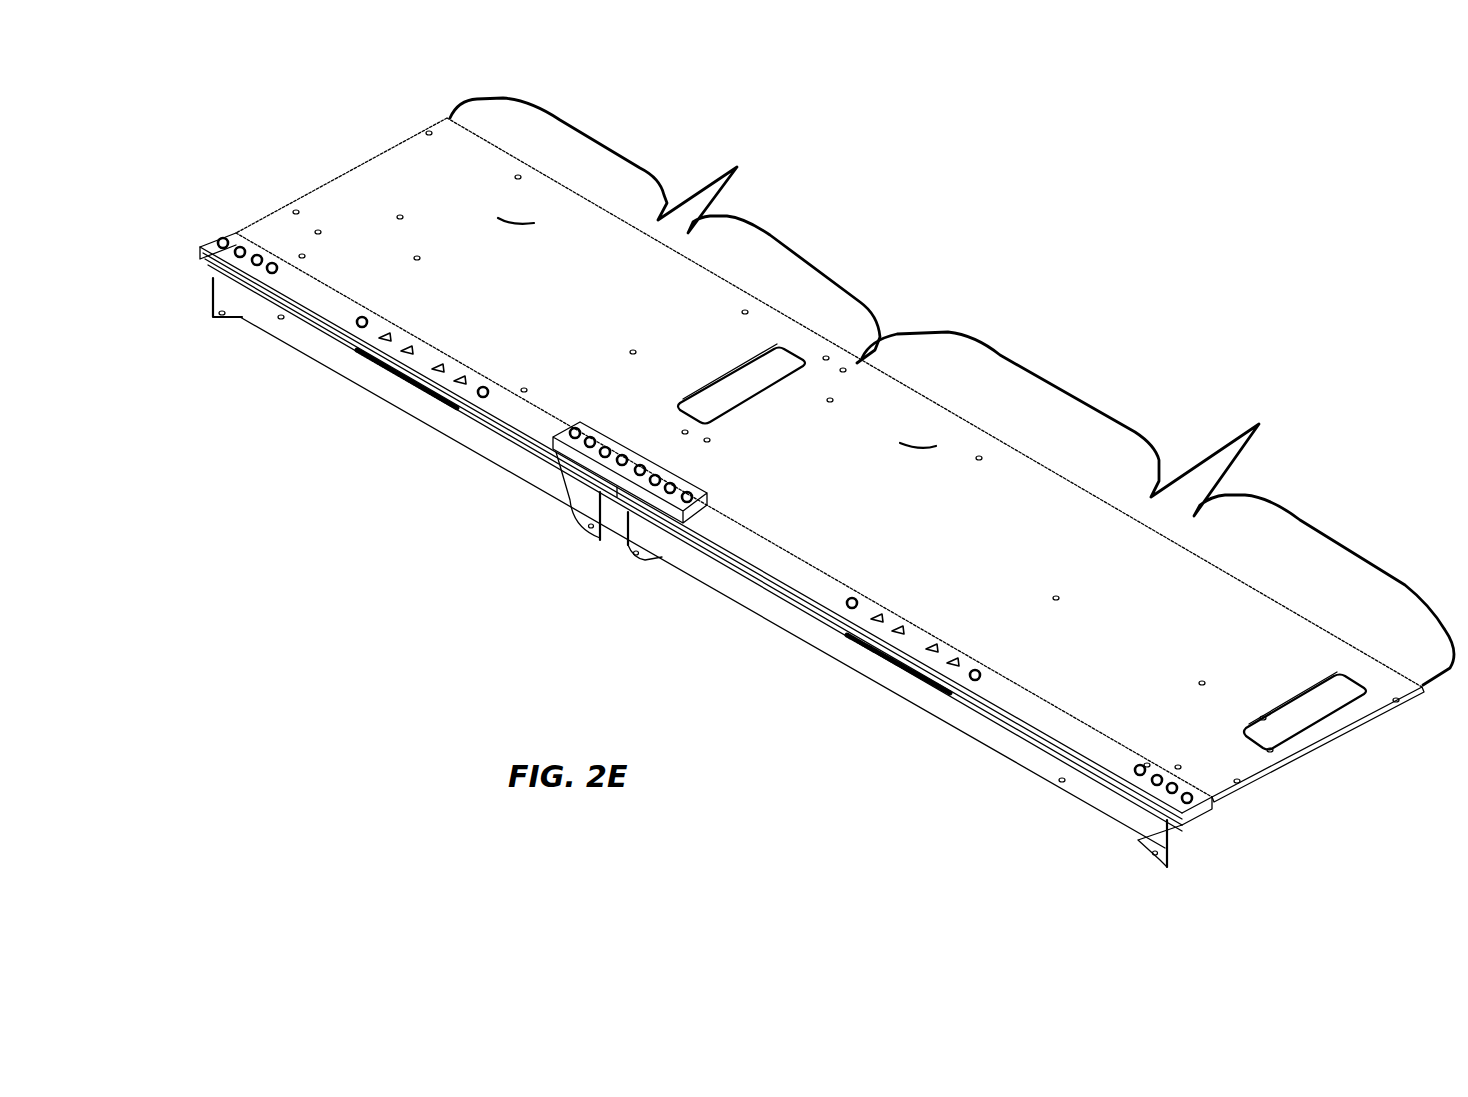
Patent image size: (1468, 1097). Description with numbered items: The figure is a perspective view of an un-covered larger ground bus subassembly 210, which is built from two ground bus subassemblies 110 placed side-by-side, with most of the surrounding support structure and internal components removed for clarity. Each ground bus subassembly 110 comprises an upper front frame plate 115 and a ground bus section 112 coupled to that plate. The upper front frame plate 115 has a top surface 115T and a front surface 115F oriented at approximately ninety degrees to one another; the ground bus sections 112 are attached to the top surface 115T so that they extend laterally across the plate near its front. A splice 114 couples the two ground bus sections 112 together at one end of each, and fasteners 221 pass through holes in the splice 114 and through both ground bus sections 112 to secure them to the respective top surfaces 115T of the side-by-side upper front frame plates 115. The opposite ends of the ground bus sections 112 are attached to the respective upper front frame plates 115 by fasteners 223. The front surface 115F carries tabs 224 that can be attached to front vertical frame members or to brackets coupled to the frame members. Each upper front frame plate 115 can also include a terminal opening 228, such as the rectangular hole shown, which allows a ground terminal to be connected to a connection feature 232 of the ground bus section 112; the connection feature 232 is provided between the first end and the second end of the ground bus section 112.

The ground bus subassembly 110 is at (383, 181).
The ground bus section 112 is at (355, 292).
The splice 114 is at (623, 443).
The upper front frame plate 115 is at (304, 362).
The top surface 115T is at (513, 212).
The front surface 115F is at (497, 445).
The larger ground bus subassembly 210 is at (938, 250).
The fasteners 221 is at (622, 465).
The fasteners 223 is at (272, 273).
The tabs 224 is at (226, 317).
The terminal opening 228 is at (408, 382).
The connection feature 232 is at (462, 378).